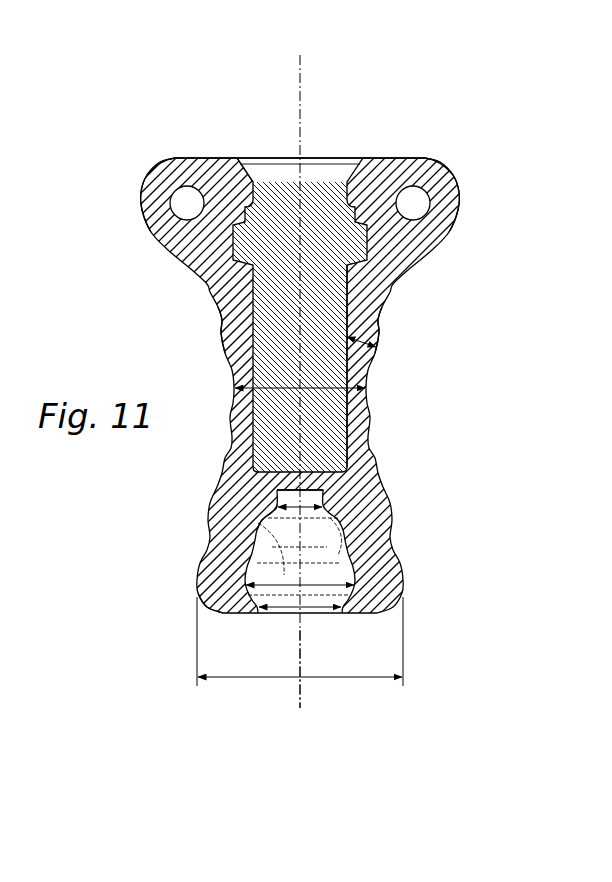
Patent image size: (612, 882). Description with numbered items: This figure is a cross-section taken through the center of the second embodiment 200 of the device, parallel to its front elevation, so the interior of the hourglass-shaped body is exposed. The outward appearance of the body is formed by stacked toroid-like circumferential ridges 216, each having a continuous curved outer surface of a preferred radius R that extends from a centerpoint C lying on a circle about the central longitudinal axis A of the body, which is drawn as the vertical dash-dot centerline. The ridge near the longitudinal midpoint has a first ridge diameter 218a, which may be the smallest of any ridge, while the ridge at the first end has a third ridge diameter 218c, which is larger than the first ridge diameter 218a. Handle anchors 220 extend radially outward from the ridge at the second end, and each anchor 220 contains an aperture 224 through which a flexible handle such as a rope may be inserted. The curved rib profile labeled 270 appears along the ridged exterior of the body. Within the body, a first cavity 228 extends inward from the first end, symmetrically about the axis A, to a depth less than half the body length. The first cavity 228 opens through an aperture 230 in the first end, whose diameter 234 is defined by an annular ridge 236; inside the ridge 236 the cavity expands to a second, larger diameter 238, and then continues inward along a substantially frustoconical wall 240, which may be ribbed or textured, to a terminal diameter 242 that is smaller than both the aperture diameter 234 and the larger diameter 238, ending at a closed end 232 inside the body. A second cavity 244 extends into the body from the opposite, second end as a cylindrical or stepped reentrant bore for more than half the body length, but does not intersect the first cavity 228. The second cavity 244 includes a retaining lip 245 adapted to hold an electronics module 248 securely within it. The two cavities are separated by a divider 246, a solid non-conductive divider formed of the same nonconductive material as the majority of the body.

The second embodiment of the device 200 is at (441, 100).
The circumferential ridges 216 is at (210, 300).
The first ridge diameter 218a is at (348, 422).
The third ridge diameter 218c is at (340, 678).
The handle anchor 220 is at (155, 182).
The aperture 224 is at (180, 205).
The first cavity 228 is at (277, 532).
The aperture 230 is at (323, 621).
The closed end 232 is at (326, 500).
The aperture diameter 234 is at (293, 606).
The annular ridge 236 is at (243, 603).
The second, larger diameter 238 is at (258, 525).
The frustoconical wall 240 is at (358, 562).
The terminal diameter 242 is at (341, 530).
The second cavity 244 is at (324, 170).
The retaining lip 245 is at (195, 157).
The divider 246 is at (300, 484).
The electronics module 248 is at (290, 210).
The rib 270 is at (233, 338).
The radius R is at (378, 331).
The centerpoint C is at (366, 370).
The central longitudinal axis A is at (300, 697).